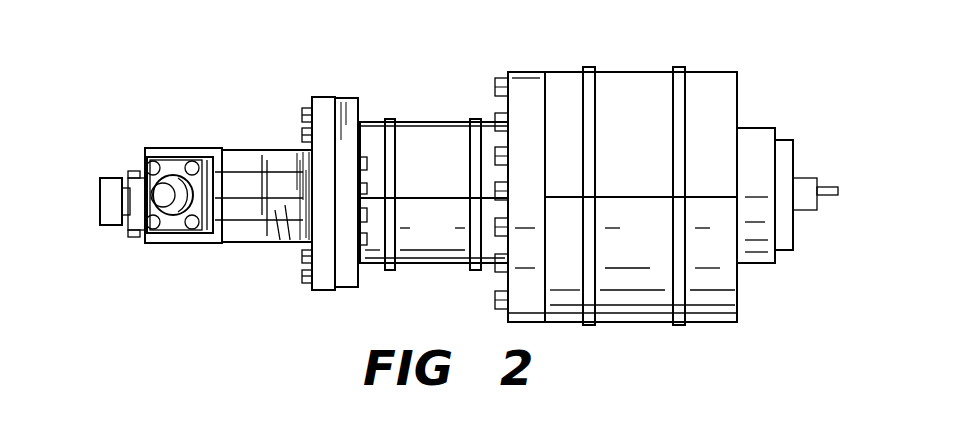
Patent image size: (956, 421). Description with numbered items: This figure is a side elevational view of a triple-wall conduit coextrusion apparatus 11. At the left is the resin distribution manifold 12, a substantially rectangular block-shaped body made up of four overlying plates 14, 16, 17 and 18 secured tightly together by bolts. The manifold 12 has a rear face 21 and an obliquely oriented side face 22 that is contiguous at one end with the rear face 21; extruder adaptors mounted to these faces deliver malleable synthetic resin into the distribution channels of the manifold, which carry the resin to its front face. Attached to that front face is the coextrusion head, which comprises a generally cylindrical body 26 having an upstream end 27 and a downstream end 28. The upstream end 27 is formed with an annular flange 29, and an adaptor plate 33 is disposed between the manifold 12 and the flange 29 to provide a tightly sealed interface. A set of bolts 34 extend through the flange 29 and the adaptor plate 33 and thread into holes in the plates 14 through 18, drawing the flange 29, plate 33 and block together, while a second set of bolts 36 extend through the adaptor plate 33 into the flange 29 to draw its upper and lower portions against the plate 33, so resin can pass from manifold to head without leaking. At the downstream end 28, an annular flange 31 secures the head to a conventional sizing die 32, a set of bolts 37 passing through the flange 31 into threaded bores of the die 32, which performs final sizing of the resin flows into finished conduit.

The triple-wall conduit coextrusion apparatus 11 is at (770, 30).
The resin distribution manifold 12 is at (173, 188).
The plate 14 is at (245, 238).
The plate 16 is at (283, 217).
The plate 17 is at (231, 178).
The plate 18 is at (250, 157).
The rear face 21 is at (147, 155).
The obliquely oriented side face 22 is at (173, 238).
The generally cylindrical body 26 is at (435, 262).
The upstream end 27 is at (368, 278).
The downstream end 28 is at (493, 284).
The annular flange 29 is at (350, 103).
The annular flange 31 is at (523, 80).
The sizing die 32 is at (650, 82).
The adaptor plate 33 is at (322, 97).
The bolts 34 is at (370, 215).
The second set of bolts 36 is at (303, 115).
The bolts 37 is at (497, 152).